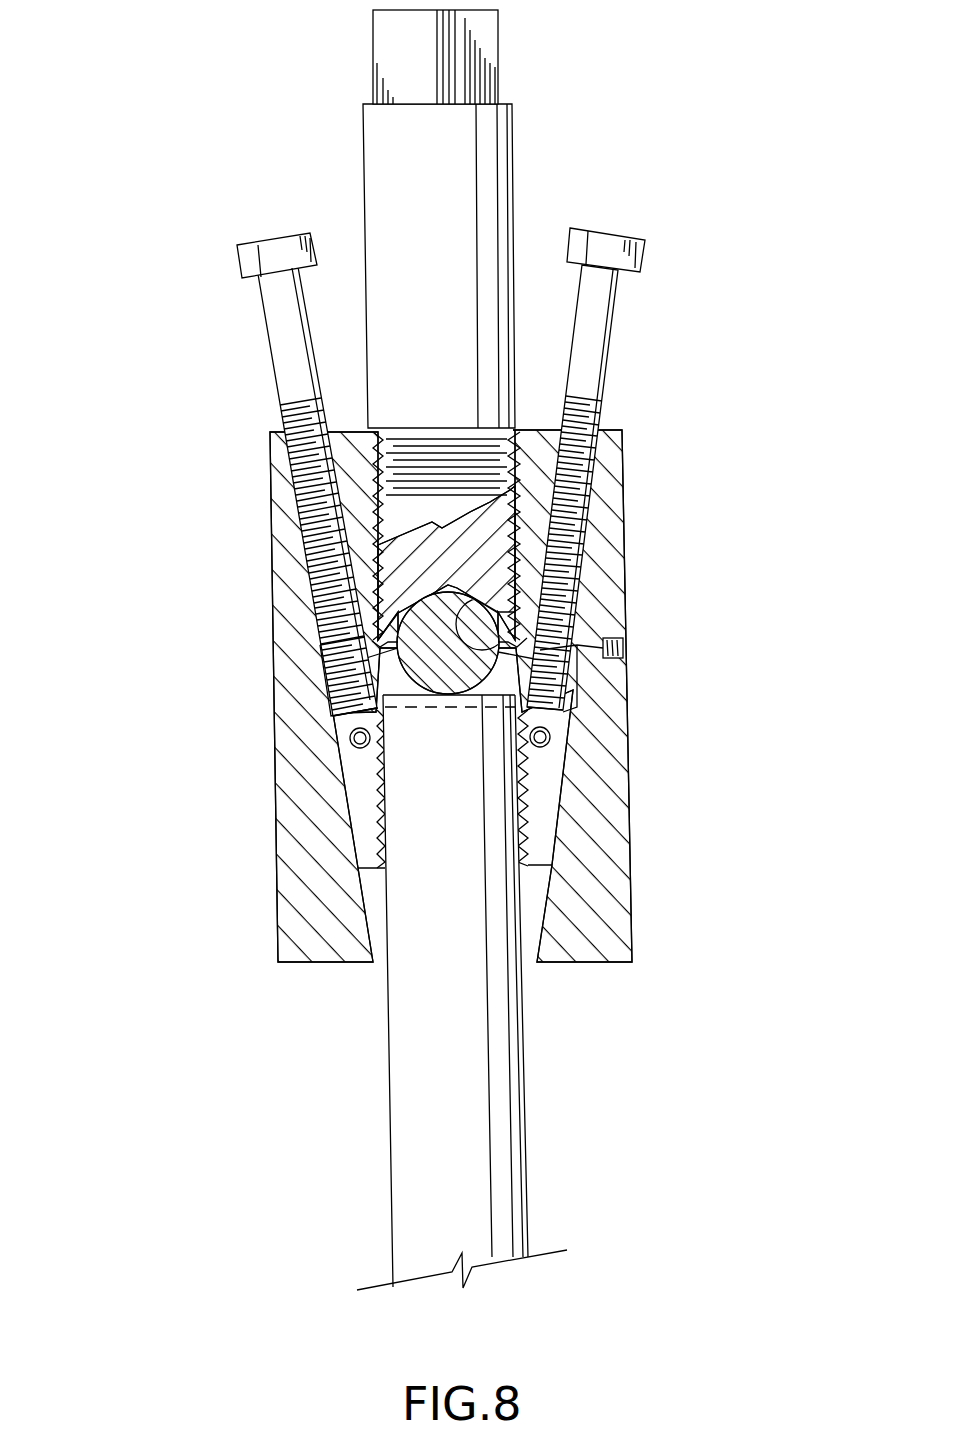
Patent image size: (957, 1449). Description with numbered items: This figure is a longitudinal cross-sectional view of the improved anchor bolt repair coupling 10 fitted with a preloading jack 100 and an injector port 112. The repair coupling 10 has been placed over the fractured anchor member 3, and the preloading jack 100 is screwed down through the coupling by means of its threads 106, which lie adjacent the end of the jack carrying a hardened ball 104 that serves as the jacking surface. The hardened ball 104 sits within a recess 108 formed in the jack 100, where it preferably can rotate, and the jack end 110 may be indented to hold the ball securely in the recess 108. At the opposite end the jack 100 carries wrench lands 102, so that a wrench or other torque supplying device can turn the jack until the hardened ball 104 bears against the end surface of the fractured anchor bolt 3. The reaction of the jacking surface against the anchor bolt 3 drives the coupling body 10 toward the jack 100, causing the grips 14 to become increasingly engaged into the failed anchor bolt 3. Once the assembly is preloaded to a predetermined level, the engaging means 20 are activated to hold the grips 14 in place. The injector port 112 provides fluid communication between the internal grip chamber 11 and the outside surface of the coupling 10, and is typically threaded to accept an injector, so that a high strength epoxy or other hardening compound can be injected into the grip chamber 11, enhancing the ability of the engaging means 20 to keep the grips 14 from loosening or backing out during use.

The fractured anchor member 3 is at (427, 1145).
The anchor bolt repair coupling 10 is at (272, 594).
The internal grip chamber 11 is at (388, 675).
The grips 14 is at (360, 820).
The engaging means 20 is at (248, 258).
The preloading jack 100 is at (490, 147).
The wrench lands 102 is at (392, 52).
The hardened ball 104 is at (465, 667).
The threads 106 is at (380, 463).
The recess 108 is at (505, 655).
The jack end 110 is at (383, 678).
The injector port 112 is at (625, 648).